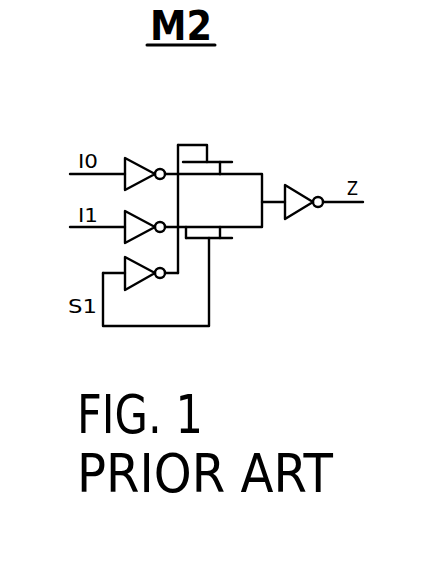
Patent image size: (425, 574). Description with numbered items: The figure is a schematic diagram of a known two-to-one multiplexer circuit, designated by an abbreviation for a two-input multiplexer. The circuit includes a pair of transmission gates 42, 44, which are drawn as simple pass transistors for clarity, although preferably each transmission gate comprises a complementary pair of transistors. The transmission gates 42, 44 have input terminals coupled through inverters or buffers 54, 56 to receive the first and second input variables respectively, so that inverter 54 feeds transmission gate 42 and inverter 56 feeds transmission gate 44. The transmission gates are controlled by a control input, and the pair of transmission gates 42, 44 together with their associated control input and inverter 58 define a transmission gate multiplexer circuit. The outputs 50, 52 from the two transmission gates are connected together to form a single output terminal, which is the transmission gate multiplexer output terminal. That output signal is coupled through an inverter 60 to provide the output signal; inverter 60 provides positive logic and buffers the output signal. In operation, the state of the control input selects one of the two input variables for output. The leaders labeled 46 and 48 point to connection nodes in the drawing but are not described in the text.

The transmission gate 42 is at (222, 160).
The transmission gate 44 is at (221, 240).
The first pass gate connection 46 is at (165, 168).
The second pass gate connection 48 is at (185, 240).
The output 50 is at (263, 177).
The output 52 is at (265, 228).
The inverter 54 is at (140, 165).
The inverter 56 is at (127, 238).
The inverter 58 is at (143, 283).
The inverter 60 is at (317, 194).